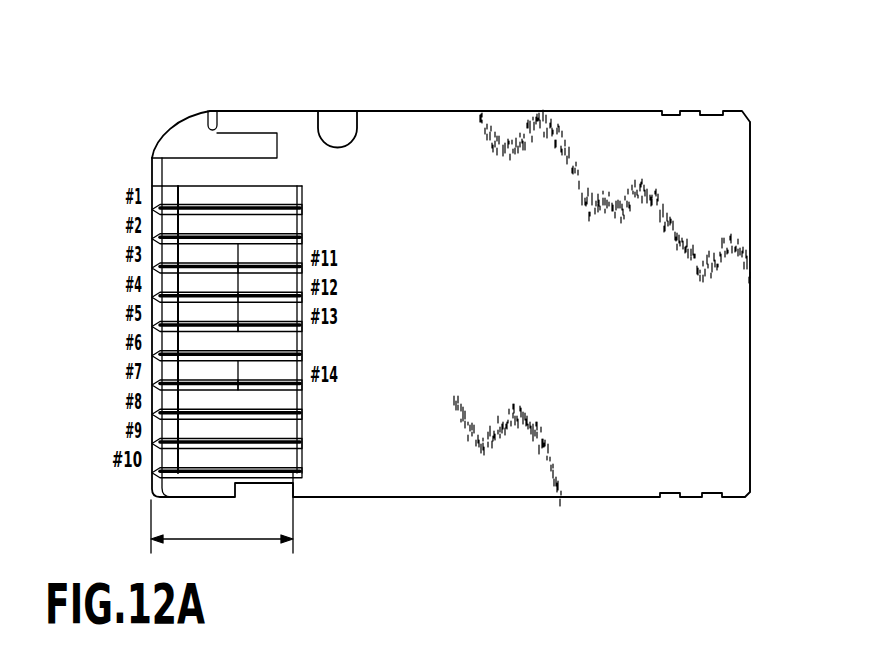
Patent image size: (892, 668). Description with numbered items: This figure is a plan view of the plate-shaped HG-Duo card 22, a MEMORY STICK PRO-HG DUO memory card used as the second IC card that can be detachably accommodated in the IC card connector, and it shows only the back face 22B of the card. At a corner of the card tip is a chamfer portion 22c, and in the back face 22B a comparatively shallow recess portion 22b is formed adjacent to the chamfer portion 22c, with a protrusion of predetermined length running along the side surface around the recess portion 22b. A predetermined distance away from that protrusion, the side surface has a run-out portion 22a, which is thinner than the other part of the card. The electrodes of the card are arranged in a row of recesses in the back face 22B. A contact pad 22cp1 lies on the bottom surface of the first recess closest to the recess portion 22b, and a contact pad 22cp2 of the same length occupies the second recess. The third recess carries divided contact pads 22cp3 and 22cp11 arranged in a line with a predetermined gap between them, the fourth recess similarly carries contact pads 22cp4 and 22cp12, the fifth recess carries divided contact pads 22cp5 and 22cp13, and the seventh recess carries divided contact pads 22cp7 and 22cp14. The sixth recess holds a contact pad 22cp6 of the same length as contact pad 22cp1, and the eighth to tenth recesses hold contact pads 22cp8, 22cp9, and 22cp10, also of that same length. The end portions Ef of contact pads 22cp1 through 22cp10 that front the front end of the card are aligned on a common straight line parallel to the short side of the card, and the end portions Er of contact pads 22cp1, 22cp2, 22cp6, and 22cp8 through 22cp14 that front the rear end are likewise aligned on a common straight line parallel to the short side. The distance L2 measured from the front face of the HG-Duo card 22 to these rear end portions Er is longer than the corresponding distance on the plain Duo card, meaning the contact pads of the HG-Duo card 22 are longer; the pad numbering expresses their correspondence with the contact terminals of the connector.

The HG-Duo card 22 is at (483, 541).
The run-out portion 22a is at (350, 120).
The recess portion 22b is at (258, 140).
The chamfer portion 22c is at (181, 128).
The back face 22B is at (735, 350).
The end portions Er is at (288, 187).
The end portions Ef is at (190, 197).
The distance L2 is at (222, 513).
The contact pad 22cp1 is at (300, 199).
The contact pad 22cp2 is at (300, 228).
The contact pad 22cp3 is at (190, 257).
The contact pad 22cp4 is at (190, 287).
The contact pad 22cp5 is at (192, 315).
The contact pad 22cp6 is at (300, 342).
The contact pad 22cp7 is at (190, 373).
The contact pad 22cp8 is at (300, 402).
The contact pad 22cp9 is at (300, 432).
The contact pad 22cp10 is at (300, 460).
The contact pad 22cp11 is at (300, 251).
The contact pad 22cp12 is at (300, 280).
The contact pad 22cp13 is at (300, 318).
The contact pad 22cp14 is at (300, 380).